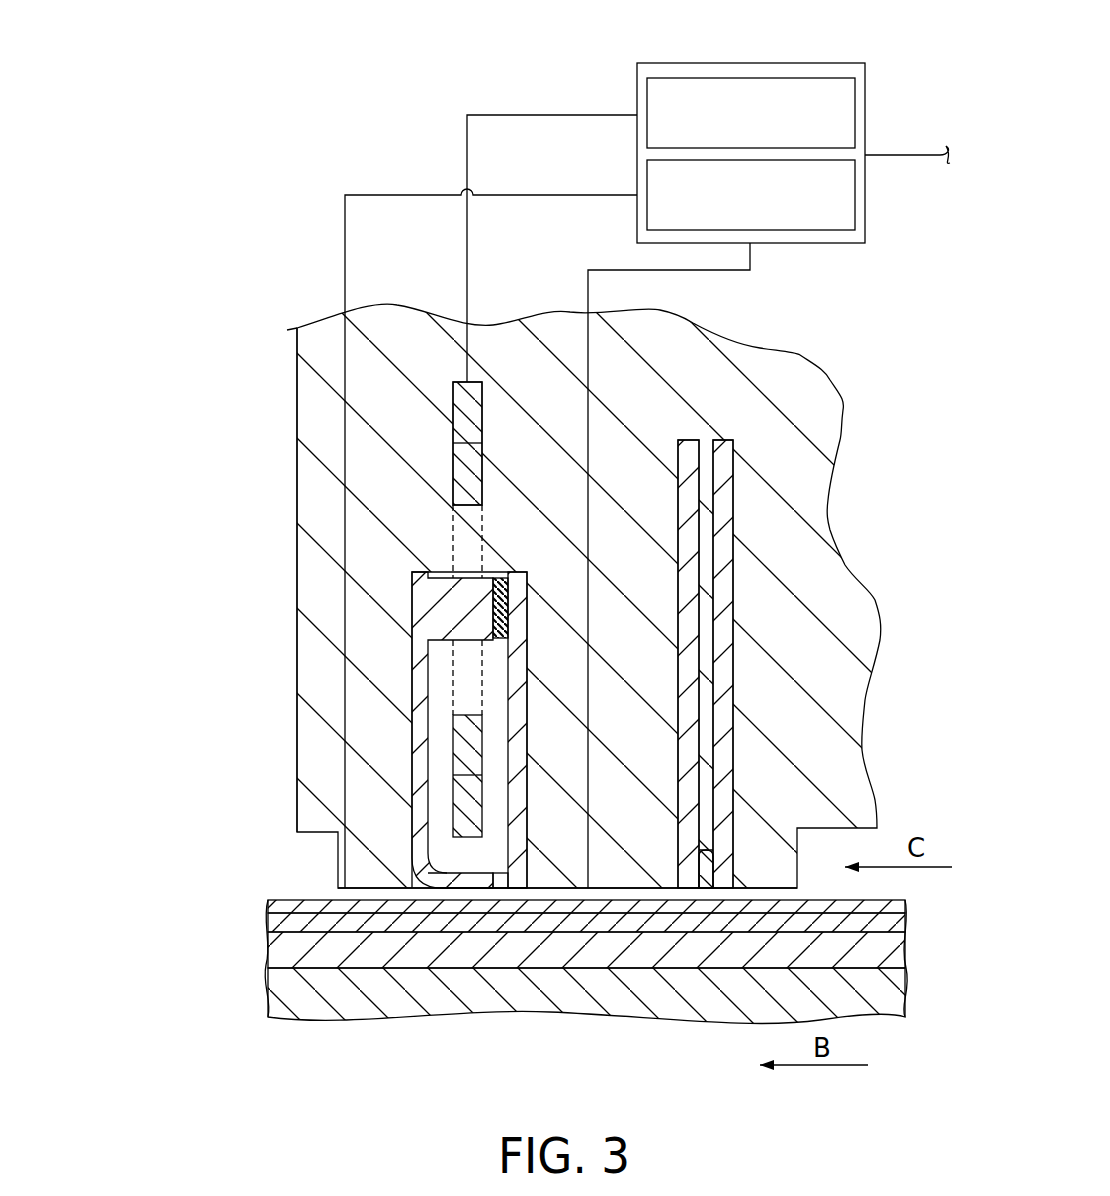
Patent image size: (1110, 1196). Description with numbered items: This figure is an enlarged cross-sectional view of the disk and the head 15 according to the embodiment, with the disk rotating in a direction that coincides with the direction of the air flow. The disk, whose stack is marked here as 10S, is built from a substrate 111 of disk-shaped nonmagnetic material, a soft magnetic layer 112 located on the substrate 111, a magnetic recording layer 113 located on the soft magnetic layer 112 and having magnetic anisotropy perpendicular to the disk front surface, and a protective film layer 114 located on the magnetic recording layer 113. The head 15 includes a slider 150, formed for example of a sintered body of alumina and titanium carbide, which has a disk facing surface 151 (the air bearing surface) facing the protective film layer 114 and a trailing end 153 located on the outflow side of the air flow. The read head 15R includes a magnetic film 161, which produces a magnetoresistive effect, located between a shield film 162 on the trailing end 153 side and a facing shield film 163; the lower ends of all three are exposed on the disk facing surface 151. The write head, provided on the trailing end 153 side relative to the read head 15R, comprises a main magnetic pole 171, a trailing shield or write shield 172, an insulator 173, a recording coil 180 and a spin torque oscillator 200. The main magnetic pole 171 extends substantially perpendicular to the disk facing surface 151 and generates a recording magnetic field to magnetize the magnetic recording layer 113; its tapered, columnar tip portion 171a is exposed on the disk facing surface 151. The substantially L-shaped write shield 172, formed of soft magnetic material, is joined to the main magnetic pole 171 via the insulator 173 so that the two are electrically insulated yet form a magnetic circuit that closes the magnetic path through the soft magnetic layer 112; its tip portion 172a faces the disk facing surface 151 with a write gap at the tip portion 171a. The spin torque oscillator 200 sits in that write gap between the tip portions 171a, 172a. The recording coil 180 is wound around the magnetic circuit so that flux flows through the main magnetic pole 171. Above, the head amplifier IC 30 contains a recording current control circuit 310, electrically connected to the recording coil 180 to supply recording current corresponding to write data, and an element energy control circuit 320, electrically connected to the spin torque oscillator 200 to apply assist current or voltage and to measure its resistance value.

The head amplifier IC 30 is at (809, 63).
The recording current control circuit 310 is at (865, 108).
The element energy control circuit 320 is at (865, 190).
The head 15 is at (393, 387).
The recording coil 180 is at (466, 472).
The insulator 173 is at (500, 578).
The slider 150 is at (802, 398).
The read head 15R is at (757, 538).
The trailing end 153 is at (297, 546).
The disk facing surface 151 is at (755, 895).
The trailing shield 172 is at (410, 720).
The main magnetic pole 171 is at (530, 751).
The spin torque oscillator 200 is at (500, 880).
The tip portion 172a is at (447, 880).
The tip portion 171a is at (530, 880).
The shield film 162 is at (690, 640).
The shield film 163 is at (723, 690).
The magnetic film 161 is at (705, 862).
The substrate 10S is at (290, 883).
The protective film layer 114 is at (272, 905).
The magnetic recording layer 113 is at (275, 922).
The soft magnetic layer 112 is at (280, 952).
The substrate 111 is at (280, 990).